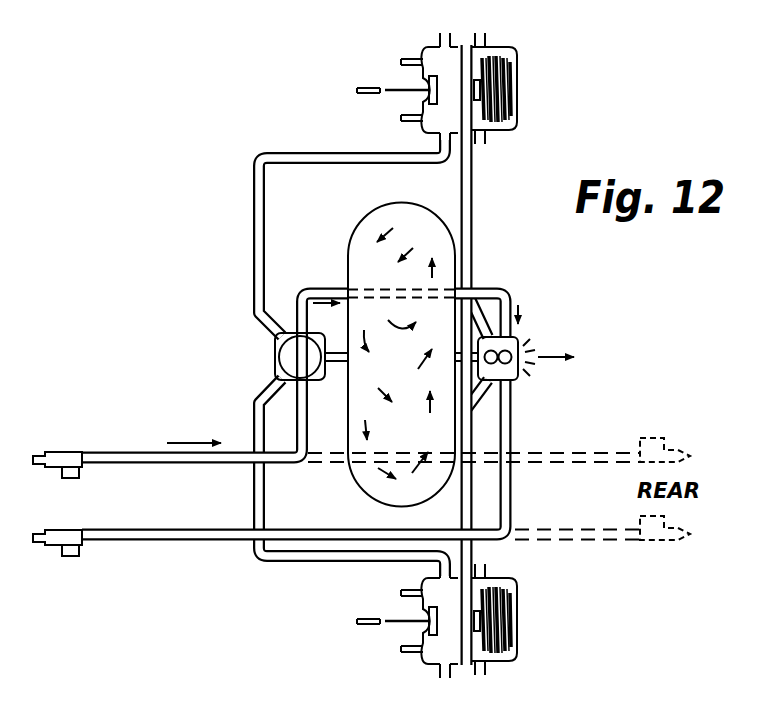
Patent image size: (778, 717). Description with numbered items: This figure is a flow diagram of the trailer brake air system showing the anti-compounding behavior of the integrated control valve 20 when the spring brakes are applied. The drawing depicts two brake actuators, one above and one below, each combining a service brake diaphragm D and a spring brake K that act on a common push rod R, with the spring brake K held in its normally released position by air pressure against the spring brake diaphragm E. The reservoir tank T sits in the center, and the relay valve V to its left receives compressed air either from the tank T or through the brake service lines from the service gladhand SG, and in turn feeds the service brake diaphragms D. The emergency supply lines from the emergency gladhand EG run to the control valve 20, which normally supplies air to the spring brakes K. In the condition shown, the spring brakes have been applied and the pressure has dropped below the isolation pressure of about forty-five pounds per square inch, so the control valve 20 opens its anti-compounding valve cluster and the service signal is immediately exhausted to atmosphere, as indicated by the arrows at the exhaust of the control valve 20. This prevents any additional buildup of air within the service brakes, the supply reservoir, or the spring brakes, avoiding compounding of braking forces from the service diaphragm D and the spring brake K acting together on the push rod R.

The service brake diaphragm D is at (423, 53).
The spring brake K is at (513, 53).
The push rod R is at (395, 89).
The spring brake diaphragm E is at (487, 127).
The reservoir tank T is at (360, 247).
The relay valve V is at (280, 355).
The service gladhand SG is at (65, 452).
The emergency gladhand EG is at (52, 557).
The integrated control valve 20 is at (519, 377).